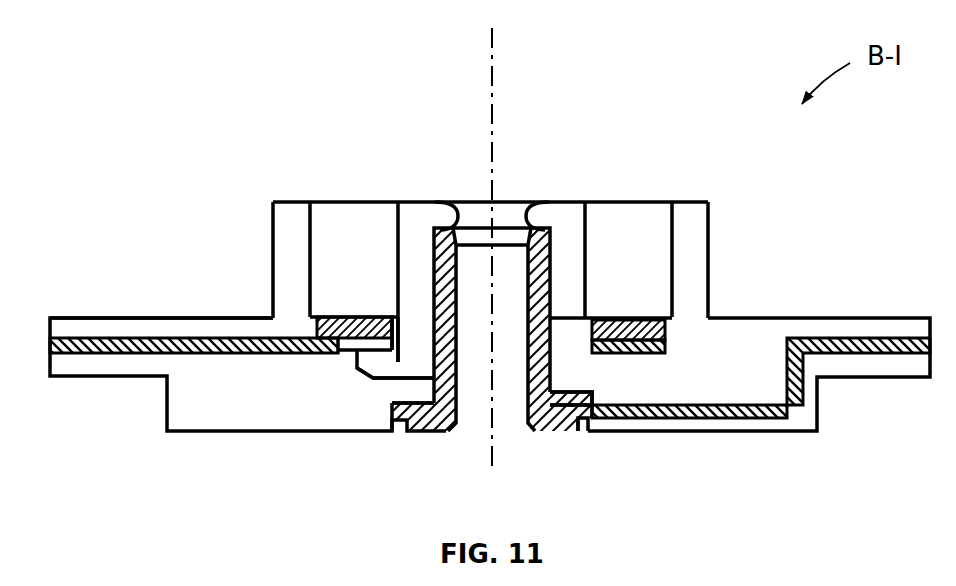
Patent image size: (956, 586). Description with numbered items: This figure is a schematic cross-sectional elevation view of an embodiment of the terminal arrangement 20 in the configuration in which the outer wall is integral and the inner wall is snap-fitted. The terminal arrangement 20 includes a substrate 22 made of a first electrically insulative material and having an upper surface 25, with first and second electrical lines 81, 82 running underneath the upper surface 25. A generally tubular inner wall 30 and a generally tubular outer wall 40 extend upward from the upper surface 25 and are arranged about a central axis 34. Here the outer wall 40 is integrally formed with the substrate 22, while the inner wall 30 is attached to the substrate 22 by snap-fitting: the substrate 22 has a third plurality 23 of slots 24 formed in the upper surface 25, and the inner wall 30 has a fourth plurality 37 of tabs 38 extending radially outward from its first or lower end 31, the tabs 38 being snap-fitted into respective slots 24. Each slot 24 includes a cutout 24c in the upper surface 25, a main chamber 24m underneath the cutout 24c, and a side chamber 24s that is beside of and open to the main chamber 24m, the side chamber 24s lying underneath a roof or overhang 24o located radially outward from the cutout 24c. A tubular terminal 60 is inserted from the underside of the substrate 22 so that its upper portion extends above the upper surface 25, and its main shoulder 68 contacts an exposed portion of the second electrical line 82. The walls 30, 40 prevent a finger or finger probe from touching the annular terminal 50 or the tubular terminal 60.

The terminal arrangement 20 is at (135, 106).
The substrate 22 is at (93, 318).
The third plurality of slots 23 is at (246, 58).
The slot 24 is at (327, 91).
The cutout 24c is at (391, 316).
The roof or overhang 24o is at (342, 350).
The side chamber 24s is at (362, 372).
The main chamber 24m is at (408, 378).
The upper surface 25 is at (165, 317).
The inner wall 30 is at (425, 220).
The first or lower end 31 is at (417, 348).
The central axis 34 is at (493, 87).
The fourth plurality of tabs 37 is at (216, 491).
The tab 38 is at (383, 365).
The outer wall 40 is at (288, 215).
The annular terminal 50 is at (360, 316).
The tubular terminal 60 is at (563, 432).
The main shoulder 68 is at (582, 420).
The first electrical line 81 is at (148, 350).
The second electrical line 82 is at (823, 347).